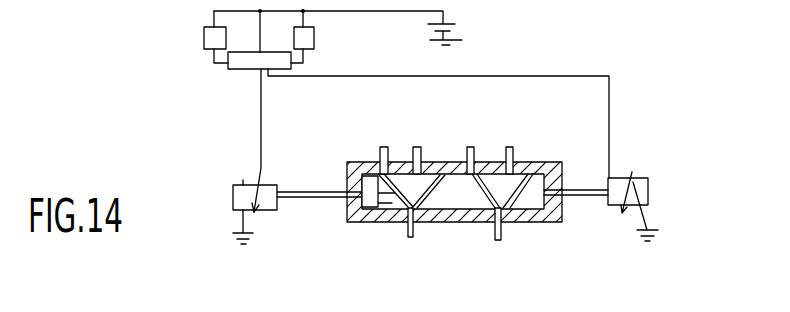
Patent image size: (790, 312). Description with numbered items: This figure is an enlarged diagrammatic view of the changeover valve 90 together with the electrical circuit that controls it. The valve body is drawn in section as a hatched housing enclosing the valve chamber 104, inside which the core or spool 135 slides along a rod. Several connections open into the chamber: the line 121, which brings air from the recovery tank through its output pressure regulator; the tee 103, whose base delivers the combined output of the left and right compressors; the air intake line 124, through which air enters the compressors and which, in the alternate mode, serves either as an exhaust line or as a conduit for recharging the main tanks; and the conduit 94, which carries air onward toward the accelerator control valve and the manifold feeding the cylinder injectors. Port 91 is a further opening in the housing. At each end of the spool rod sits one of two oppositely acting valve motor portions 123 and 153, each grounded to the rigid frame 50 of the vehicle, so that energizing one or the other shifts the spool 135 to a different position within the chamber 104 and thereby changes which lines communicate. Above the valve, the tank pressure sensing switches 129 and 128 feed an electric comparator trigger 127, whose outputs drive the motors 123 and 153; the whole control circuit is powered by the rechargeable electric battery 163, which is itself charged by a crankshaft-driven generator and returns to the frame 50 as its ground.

The rigid frame 50 is at (449, 46).
The changeover valve 90 is at (692, 249).
The port tube 91 is at (388, 149).
The conduit 94 is at (413, 228).
The tee 103 is at (503, 226).
The valve chamber 104 is at (362, 170).
The line 121 is at (421, 153).
The valve motor portion 123 is at (233, 195).
The air intake 124 is at (512, 147).
The electric comparator trigger 127 is at (236, 70).
The pressure sensing switch 128 is at (314, 37).
The pressure sensing switch 129 is at (204, 42).
The spool 135 is at (391, 200).
The valve motor portion 153 is at (640, 188).
The rechargeable electric battery 163 is at (448, 23).